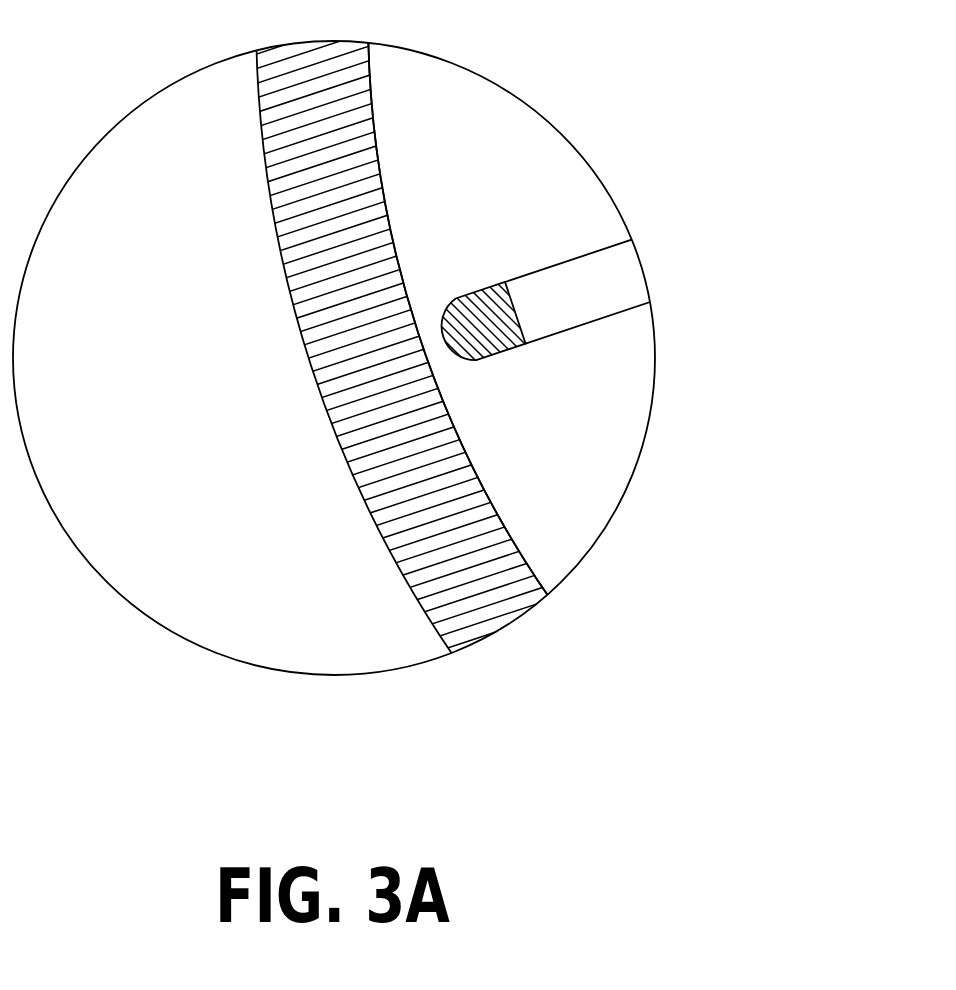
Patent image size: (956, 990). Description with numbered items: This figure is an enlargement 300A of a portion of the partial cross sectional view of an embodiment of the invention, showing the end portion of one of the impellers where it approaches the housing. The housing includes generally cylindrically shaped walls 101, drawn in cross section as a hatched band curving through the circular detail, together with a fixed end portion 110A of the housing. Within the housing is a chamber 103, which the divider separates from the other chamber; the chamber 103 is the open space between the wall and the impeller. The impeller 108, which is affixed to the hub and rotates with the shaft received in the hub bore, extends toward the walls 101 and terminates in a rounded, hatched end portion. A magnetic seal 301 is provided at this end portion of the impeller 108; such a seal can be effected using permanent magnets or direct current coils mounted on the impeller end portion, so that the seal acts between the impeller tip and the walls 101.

The enlargement 300A is at (597, 140).
The walls 101 is at (370, 413).
The magnetic seal 301 is at (438, 303).
The impeller 108 is at (547, 307).
The chamber 103 is at (500, 200).
The fixed end portion 110A is at (557, 441).